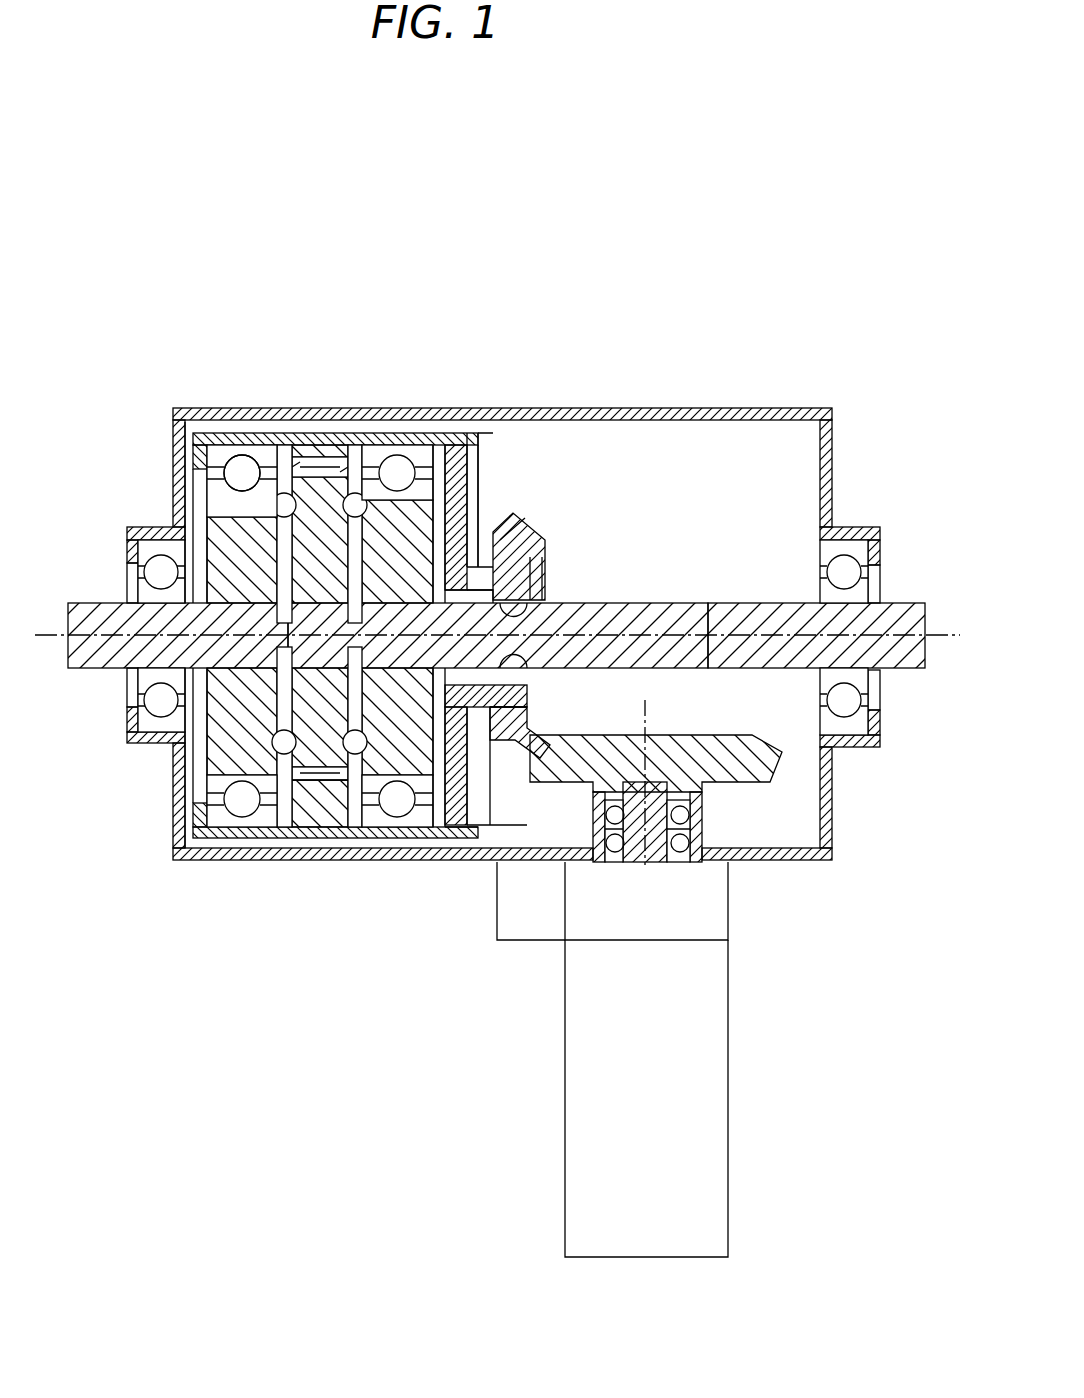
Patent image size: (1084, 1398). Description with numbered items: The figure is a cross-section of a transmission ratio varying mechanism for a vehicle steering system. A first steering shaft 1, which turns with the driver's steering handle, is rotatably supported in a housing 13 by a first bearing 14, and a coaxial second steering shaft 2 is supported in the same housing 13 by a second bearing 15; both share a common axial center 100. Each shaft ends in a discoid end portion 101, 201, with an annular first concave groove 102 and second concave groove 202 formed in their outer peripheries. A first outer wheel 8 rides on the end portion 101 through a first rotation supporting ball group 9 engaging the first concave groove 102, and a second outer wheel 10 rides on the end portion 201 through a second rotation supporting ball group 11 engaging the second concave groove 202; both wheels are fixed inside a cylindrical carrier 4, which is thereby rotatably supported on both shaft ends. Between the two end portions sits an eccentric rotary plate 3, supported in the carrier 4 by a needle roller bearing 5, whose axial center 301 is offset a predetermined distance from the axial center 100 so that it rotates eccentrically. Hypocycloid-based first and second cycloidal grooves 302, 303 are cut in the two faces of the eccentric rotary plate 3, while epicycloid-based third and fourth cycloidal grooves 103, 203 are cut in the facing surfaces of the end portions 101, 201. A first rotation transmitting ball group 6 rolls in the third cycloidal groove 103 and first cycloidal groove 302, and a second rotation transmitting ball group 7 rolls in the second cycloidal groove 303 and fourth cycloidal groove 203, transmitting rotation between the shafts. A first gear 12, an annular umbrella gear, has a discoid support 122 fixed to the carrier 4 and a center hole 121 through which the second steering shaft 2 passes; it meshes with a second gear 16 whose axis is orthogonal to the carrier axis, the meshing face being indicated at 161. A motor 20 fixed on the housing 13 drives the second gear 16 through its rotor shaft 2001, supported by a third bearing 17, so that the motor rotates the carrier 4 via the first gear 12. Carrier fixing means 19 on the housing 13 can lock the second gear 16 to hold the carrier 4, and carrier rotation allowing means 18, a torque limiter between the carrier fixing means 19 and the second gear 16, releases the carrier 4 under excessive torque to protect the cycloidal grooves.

The first steering shaft 1 is at (102, 660).
The second steering shaft 2 is at (907, 613).
The axial center 100 is at (697, 623).
The eccentric rotary plate 3 is at (305, 452).
The axial center 301 is at (330, 625).
The first cycloidal groove 302 is at (283, 778).
The second cycloidal groove 303 is at (345, 790).
The carrier 4 is at (435, 455).
The bearing 5 is at (300, 790).
The first rotation transmitting ball group 6 is at (207, 503).
The second rotation transmitting ball group 7 is at (362, 460).
The first outer wheel 8 is at (225, 440).
The first rotation supporting ball group 9 is at (203, 457).
The second outer wheel 10 is at (397, 805).
The second rotation supporting ball group 11 is at (420, 812).
The first gear 12 is at (520, 550).
The center hole 121 is at (530, 597).
The support 122 is at (460, 487).
The housing 13 is at (173, 515).
The first bearing 14 is at (148, 725).
The second bearing 15 is at (847, 547).
The second gear 16 is at (745, 797).
The bevel gear 161 is at (660, 710).
The third bearing 17 is at (702, 817).
The carrier rotation allowing means 18 is at (715, 918).
The carrier fixing means 19 is at (532, 930).
The motor 20 is at (718, 1088).
The rotor shaft 2001 is at (653, 863).
The end portion 101 is at (218, 455).
The first concave groove 102 is at (230, 472).
The third cycloidal groove 103 is at (240, 817).
The end portion 201 is at (423, 530).
The second concave groove 202 is at (455, 800).
The fourth cycloidal groove 203 is at (355, 805).